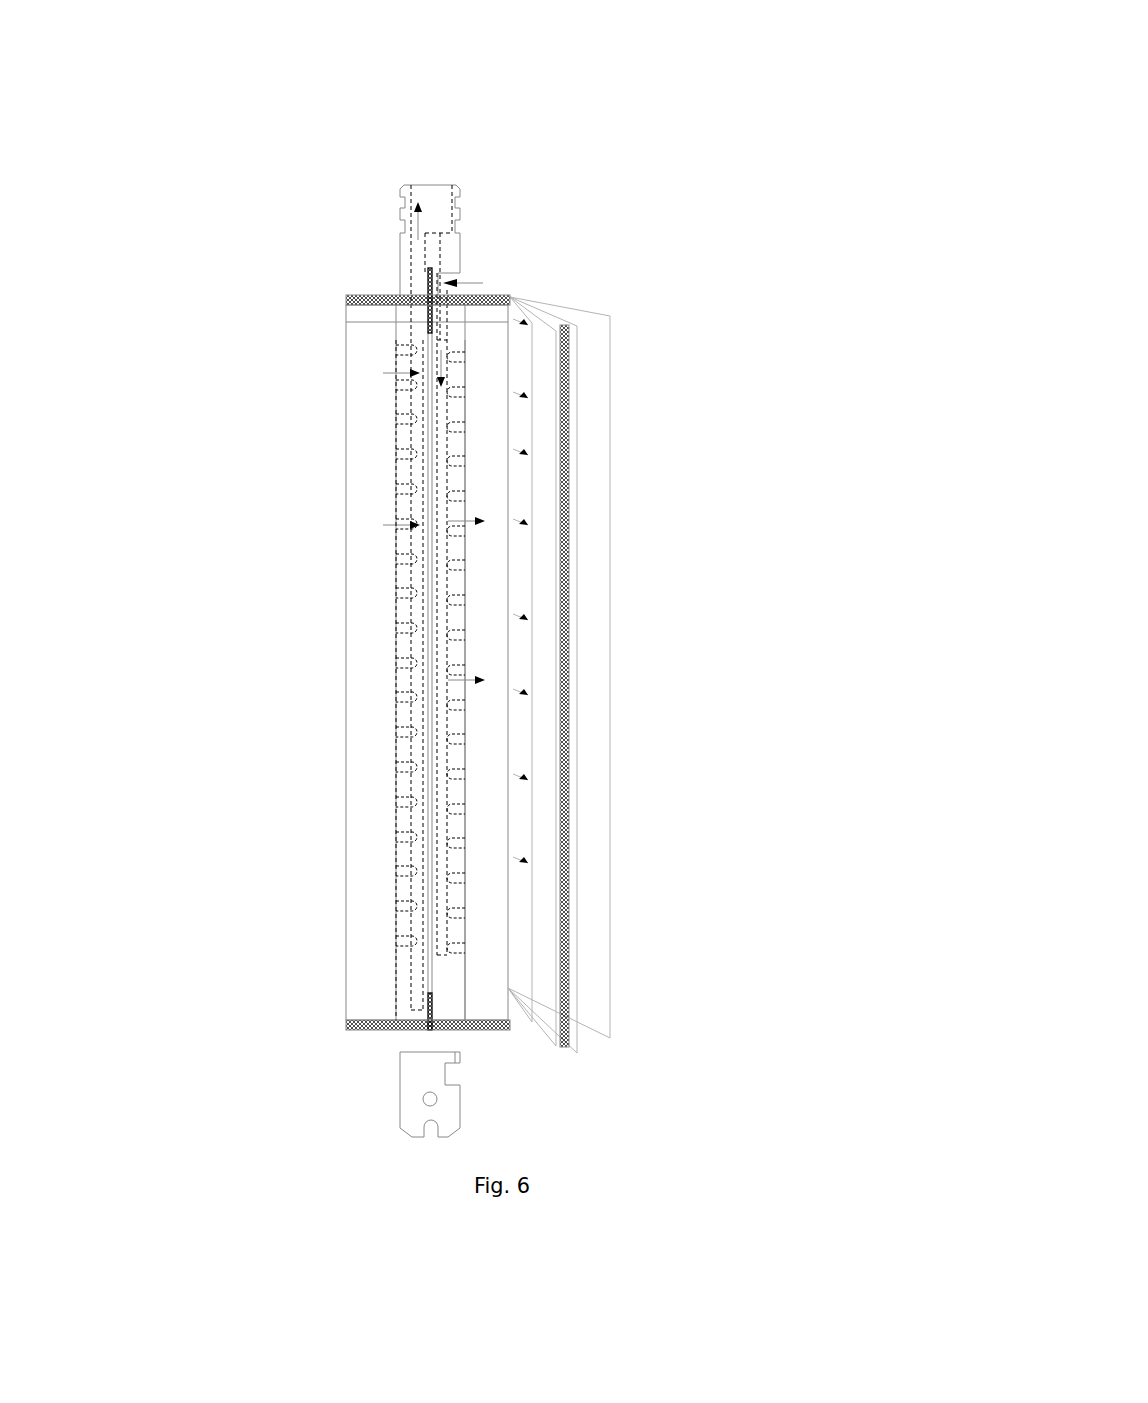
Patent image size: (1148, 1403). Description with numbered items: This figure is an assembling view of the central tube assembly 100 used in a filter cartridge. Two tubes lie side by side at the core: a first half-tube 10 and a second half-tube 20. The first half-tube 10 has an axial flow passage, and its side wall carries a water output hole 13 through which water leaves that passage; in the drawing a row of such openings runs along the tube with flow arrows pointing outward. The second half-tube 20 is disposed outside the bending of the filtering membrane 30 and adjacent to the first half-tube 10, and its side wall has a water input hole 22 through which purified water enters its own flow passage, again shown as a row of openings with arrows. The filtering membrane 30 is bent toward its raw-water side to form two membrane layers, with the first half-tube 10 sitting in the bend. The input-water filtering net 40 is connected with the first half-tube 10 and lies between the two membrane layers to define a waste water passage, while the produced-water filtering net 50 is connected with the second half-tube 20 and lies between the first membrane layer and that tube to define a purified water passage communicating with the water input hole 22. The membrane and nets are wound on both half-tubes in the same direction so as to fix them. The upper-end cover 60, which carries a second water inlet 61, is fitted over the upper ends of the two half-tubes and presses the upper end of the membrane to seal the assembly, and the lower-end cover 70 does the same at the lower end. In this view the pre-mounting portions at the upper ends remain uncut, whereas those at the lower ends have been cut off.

The central tube assembly 100 is at (513, 132).
The first half-tube 10 is at (465, 480).
The water output hole 13 is at (450, 600).
The second half-tube 20 is at (408, 472).
The water input hole 22 is at (408, 590).
The filtering membrane 30 is at (568, 670).
The input-water filtering net 40 is at (532, 758).
The produced-water filtering net 50 is at (593, 927).
The upper-end cover 60 is at (447, 253).
The second water inlet 61 is at (463, 288).
The lower-end cover 70 is at (487, 1030).